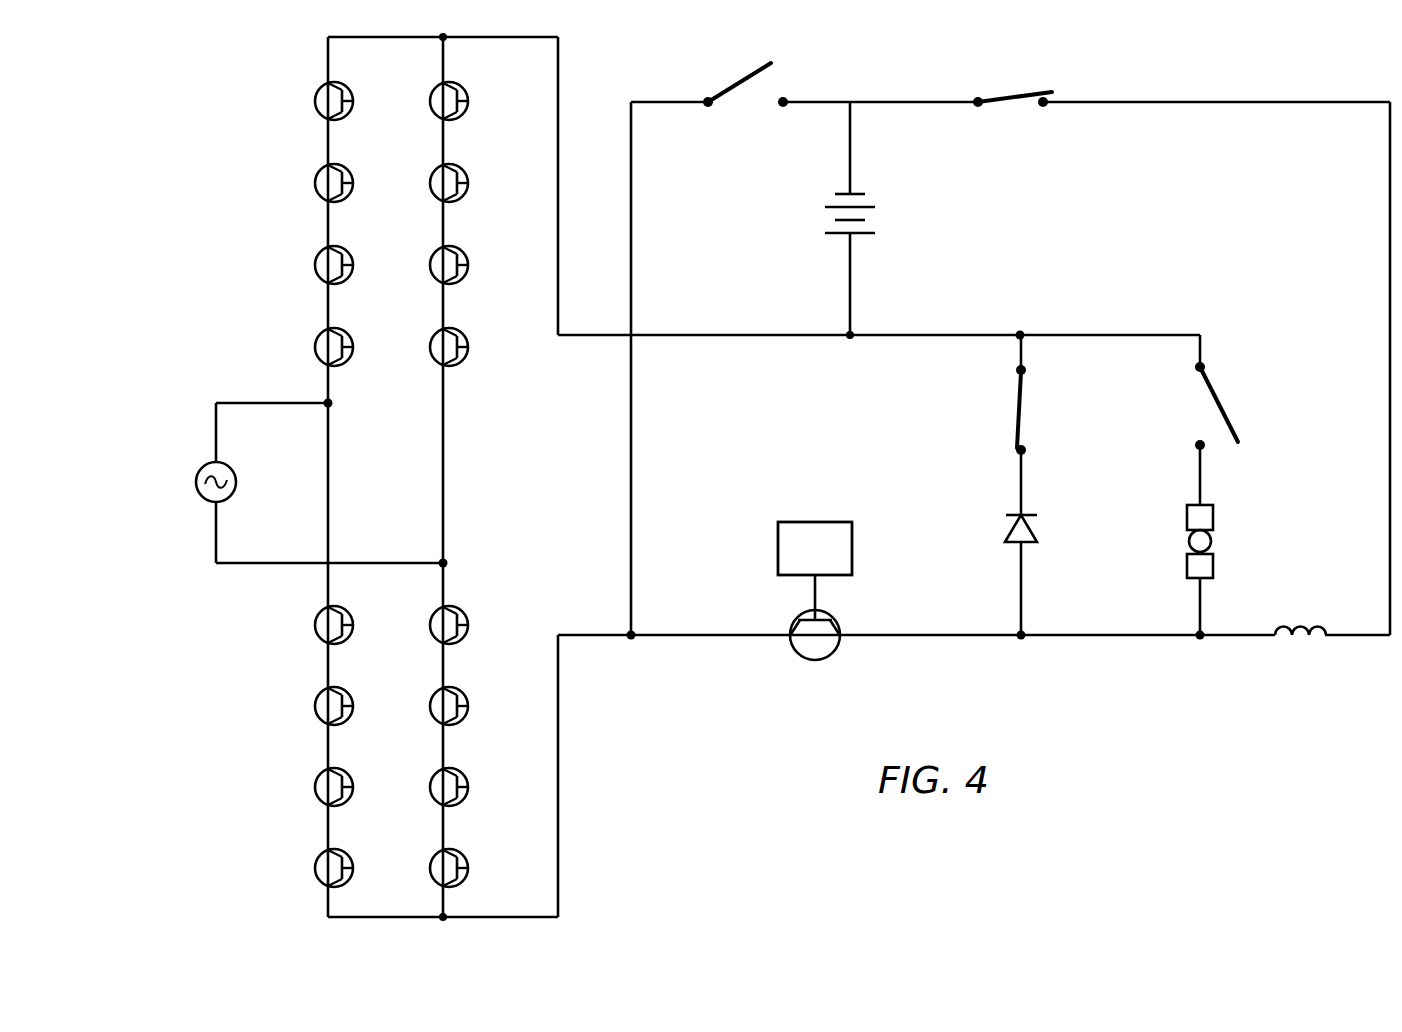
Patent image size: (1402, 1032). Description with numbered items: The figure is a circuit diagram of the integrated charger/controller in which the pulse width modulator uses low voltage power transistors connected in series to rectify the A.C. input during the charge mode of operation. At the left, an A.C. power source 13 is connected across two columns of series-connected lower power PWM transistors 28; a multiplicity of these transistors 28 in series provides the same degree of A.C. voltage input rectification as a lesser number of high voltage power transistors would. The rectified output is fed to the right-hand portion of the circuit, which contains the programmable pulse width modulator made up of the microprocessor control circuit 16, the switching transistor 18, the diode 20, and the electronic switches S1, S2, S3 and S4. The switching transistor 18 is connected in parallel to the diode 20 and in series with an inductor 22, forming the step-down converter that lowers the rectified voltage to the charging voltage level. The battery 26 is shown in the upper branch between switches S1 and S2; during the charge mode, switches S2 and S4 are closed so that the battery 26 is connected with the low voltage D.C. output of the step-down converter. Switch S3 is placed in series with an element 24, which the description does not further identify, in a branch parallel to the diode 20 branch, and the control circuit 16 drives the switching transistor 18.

The A.C. power source 13 is at (204, 497).
The microprocessor control circuit 16 is at (820, 522).
The switching transistor 18 is at (812, 660).
The diode 20 is at (1006, 530).
The inductor 22 is at (1296, 637).
The indicator lamp 24 is at (1212, 540).
The battery 26 is at (873, 205).
The lower power PWM transistors 28 is at (318, 636).
The electronic switch S1 is at (745, 102).
The electronic switch S2 is at (1012, 119).
The electronic switch S3 is at (1195, 406).
The electronic switch S4 is at (994, 395).